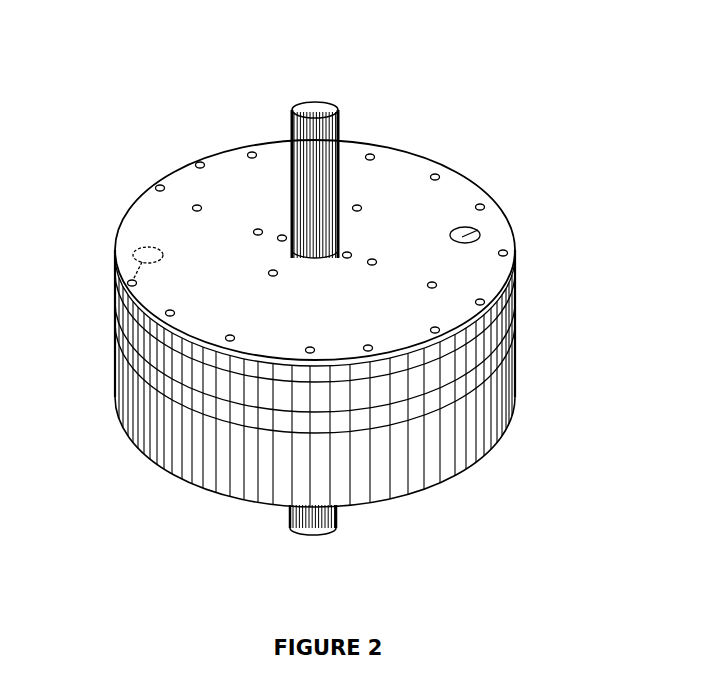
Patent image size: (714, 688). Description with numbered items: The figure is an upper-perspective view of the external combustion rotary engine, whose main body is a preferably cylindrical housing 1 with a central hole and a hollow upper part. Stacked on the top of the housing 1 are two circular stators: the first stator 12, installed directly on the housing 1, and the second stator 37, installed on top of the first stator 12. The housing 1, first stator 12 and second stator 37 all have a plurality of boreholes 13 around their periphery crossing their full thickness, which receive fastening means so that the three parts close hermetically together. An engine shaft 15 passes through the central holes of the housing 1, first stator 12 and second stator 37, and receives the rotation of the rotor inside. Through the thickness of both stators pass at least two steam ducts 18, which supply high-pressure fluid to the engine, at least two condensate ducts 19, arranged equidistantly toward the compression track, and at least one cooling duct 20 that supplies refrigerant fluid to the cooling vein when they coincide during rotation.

The housing 1 is at (455, 443).
The first stator 12 is at (448, 395).
The second stator 37 is at (452, 367).
The engine shaft 15 is at (333, 115).
The condensate ducts 19 is at (273, 270).
The cooling duct 20 is at (259, 229).
The boreholes 13 is at (309, 353).
The steam ducts 18 is at (478, 230).